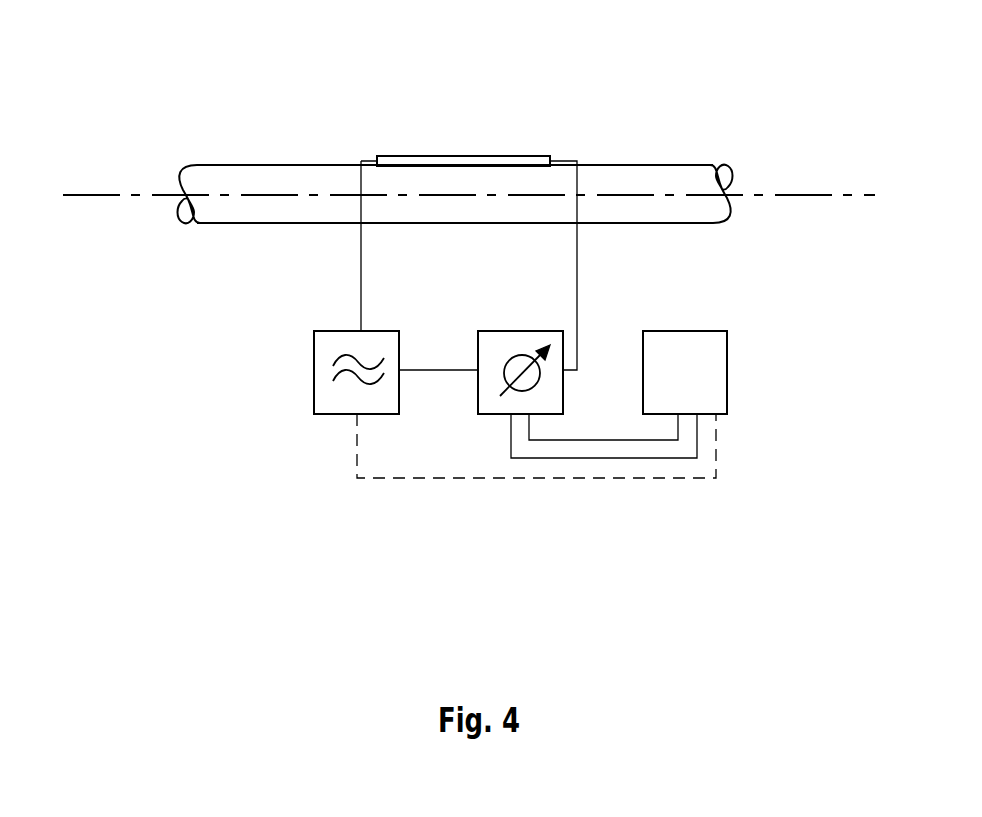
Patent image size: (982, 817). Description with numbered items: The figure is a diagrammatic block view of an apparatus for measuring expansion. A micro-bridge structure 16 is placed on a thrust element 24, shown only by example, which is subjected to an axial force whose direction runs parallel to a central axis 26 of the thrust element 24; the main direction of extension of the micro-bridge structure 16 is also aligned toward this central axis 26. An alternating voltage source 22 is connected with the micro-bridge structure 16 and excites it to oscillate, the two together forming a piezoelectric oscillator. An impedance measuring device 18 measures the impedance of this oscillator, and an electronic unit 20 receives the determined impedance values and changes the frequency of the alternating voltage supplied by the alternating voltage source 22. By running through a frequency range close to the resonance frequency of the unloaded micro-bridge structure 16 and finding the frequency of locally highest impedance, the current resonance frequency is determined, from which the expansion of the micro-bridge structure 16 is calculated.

The micro-bridge structure 16 is at (469, 138).
The impedance measuring device 18 is at (498, 405).
The electronic unit 20 is at (708, 383).
The alternating voltage source 22 is at (335, 403).
The thrust element 24 is at (663, 182).
The central axis 26 is at (800, 196).